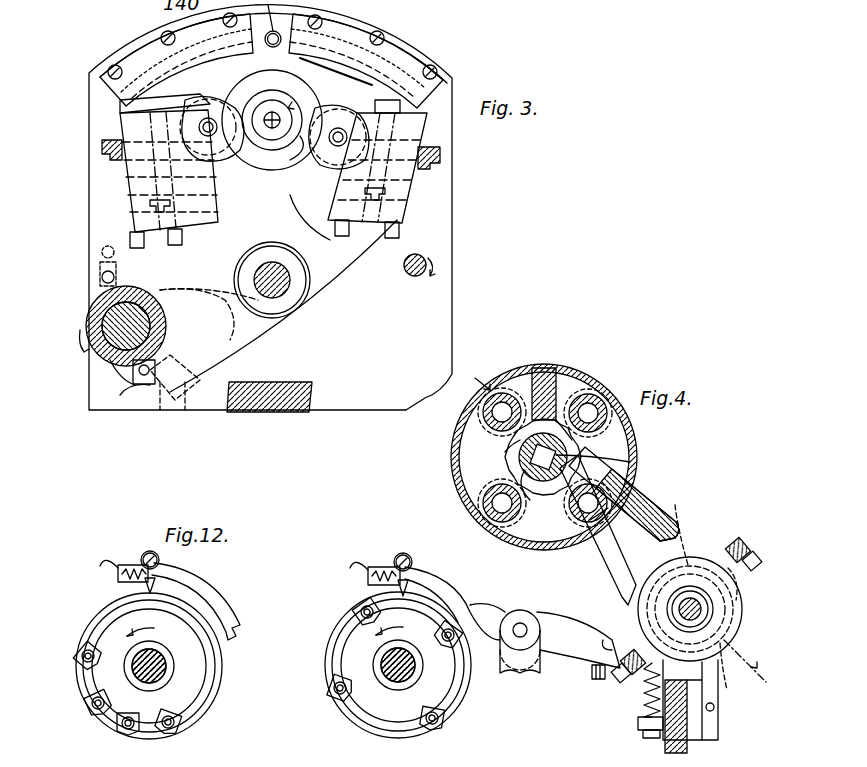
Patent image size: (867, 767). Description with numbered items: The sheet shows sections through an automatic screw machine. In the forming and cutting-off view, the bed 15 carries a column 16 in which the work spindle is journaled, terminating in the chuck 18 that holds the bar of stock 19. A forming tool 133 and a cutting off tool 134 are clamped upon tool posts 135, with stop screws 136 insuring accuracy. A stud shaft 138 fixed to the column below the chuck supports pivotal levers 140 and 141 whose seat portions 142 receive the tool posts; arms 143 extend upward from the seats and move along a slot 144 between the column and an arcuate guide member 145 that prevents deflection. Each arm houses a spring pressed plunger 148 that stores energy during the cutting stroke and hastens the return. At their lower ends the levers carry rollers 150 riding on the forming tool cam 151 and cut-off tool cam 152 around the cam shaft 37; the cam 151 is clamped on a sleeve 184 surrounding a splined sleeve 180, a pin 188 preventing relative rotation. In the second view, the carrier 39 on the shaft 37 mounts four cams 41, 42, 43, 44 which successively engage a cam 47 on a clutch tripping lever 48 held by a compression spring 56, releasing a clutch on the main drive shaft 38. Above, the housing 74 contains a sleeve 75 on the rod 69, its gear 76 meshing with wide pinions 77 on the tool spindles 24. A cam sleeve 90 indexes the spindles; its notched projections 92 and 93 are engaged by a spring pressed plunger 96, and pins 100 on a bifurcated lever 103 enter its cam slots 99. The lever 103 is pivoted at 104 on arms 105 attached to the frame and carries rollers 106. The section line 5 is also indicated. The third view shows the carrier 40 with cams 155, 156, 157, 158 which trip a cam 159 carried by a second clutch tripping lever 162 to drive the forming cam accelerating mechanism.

In FIG. 4, the section line 5 is at (621, 511).
In FIG. 3, the frame or bed 15 is at (270, 412).
In FIG. 3, the column 16 is at (452, 185).
In FIG. 3, the bar stock holding chuck 18 is at (272, 130).
In FIG. 3, the bar of stock 19 is at (273, 112).
In FIG. 4, the tool supporting spindles 24 is at (540, 385).
In FIG. 3, the cam shaft 37 is at (120, 322).
In FIG. 4, the cam shaft 37 is at (392, 668).
In FIG. 12, the cam shaft 37 is at (140, 660).
In FIG. 3, the main drive shaft 38 is at (415, 276).
In FIG. 4, the main drive shaft 38 is at (688, 590).
In FIG. 4, the carrier 39 is at (458, 682).
In FIG. 12, the carrier 40 is at (205, 682).
In FIG. 4, the cam 41 is at (355, 605).
In FIG. 4, the cam 42 is at (458, 625).
In FIG. 4, the cam 43 is at (438, 728).
In FIG. 4, the cam 44 is at (328, 685).
In FIG. 4, the cam 47 is at (395, 565).
In FIG. 4, the clutch tripping lever 48 is at (440, 580).
In FIG. 4, the compression spring 56 is at (640, 700).
In FIG. 4, the rod 69 is at (630, 462).
In FIG. 4, the housing 74 is at (598, 378).
In FIG. 4, the sleeve 75 is at (530, 466).
In FIG. 4, the gear 76 is at (510, 438).
In FIG. 4, the pinions 77 is at (600, 400).
In FIG. 4, the cam sleeve 90 is at (520, 452).
In FIG. 4, the notched projection 92 is at (545, 368).
In FIG. 4, the notched projection 93 is at (570, 440).
In FIG. 4, the spring pressed plunger 96 is at (565, 420).
In FIG. 4, the cam slots 99 is at (512, 475).
In FIG. 4, the pins 100 is at (528, 490).
In FIG. 4, the bifurcated lever 103 is at (608, 566).
In FIG. 4, the pivot 104 is at (740, 545).
In FIG. 4, the arms 105 is at (772, 584).
In FIG. 4, the rollers 106 is at (715, 596).
In FIG. 3, the forming tool 133 is at (130, 110).
In FIG. 3, the cutting off tool 134 is at (380, 80).
In FIG. 3, the tool posts 135 is at (120, 180).
In FIG. 3, the stop screws 136 is at (102, 146).
In FIG. 3, the stud shaft 138 is at (278, 288).
In FIG. 3, the pivotal lever 140 is at (235, 170).
In FIG. 3, the pivotal lever 141 is at (325, 222).
In FIG. 3, the seat portions 142 is at (190, 235).
In FIG. 3, the arms 143 is at (160, 50).
In FIG. 3, the slot 144 is at (180, 36).
In FIG. 3, the arcuate guide member 145 is at (100, 52).
In FIG. 3, the spring pressed plunger 148 is at (285, 40).
In FIG. 3, the rollers 150 is at (100, 252).
In FIG. 3, the forming tool cam 151 is at (200, 318).
In FIG. 3, the cut-off tool cam 152 is at (185, 410).
In FIG. 12, the cam 155 is at (180, 726).
In FIG. 12, the cam 156 is at (118, 730).
In FIG. 12, the cam 157 is at (88, 706).
In FIG. 12, the cam 158 is at (78, 652).
In FIG. 12, the cam 159 is at (158, 575).
In FIG. 12, the clutch tripping lever 162 is at (215, 610).
In FIG. 3, the sleeve 180 is at (118, 360).
In FIG. 3, the sleeve 184 is at (112, 366).
In FIG. 3, the pin 188 is at (120, 395).